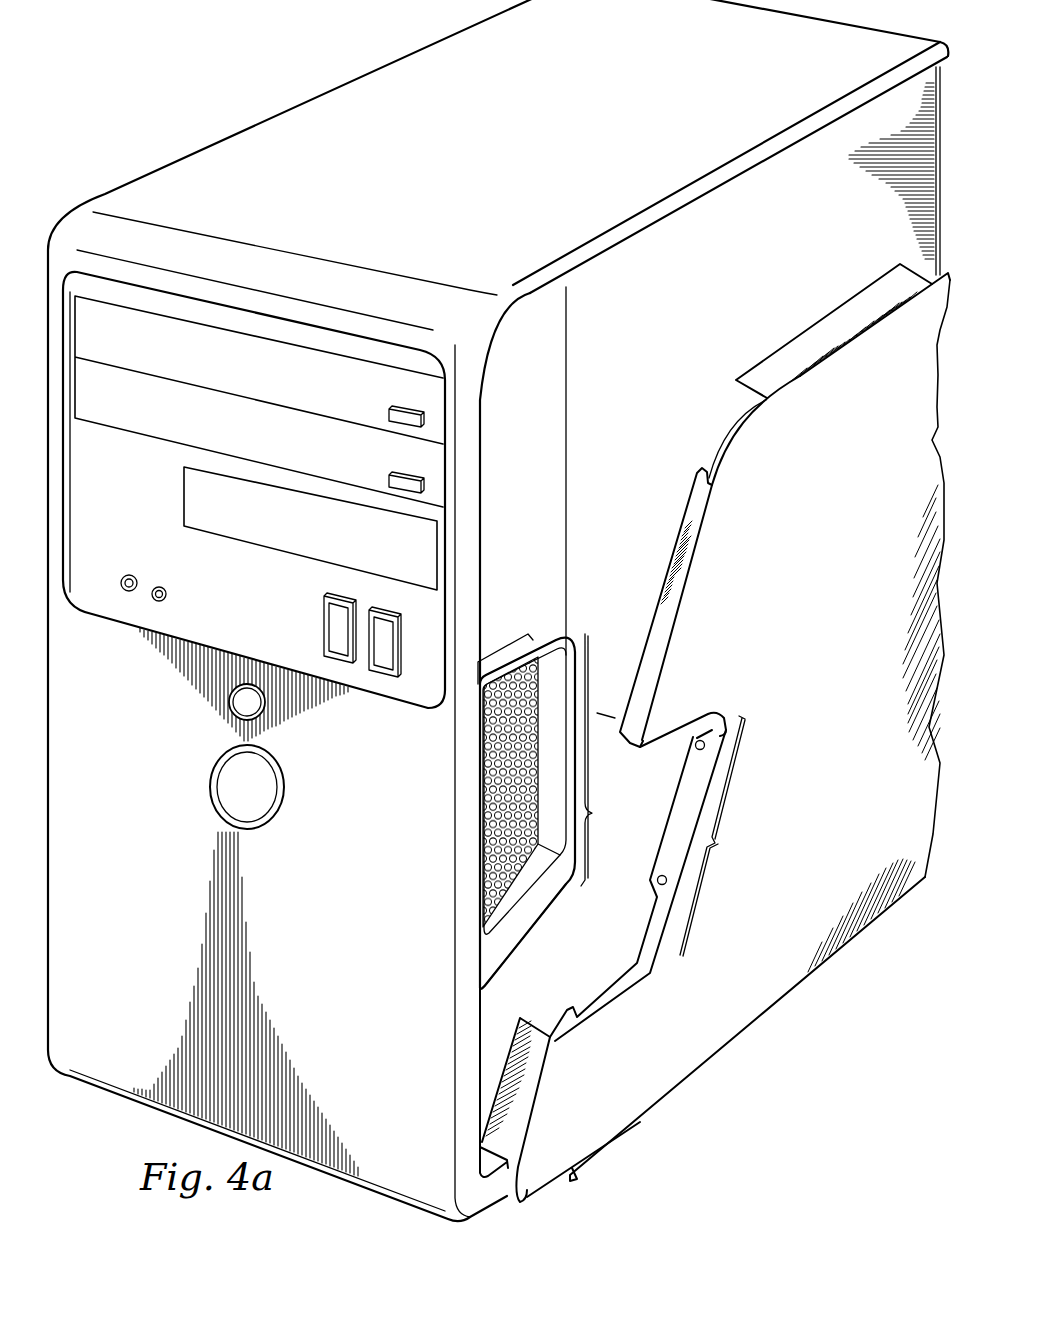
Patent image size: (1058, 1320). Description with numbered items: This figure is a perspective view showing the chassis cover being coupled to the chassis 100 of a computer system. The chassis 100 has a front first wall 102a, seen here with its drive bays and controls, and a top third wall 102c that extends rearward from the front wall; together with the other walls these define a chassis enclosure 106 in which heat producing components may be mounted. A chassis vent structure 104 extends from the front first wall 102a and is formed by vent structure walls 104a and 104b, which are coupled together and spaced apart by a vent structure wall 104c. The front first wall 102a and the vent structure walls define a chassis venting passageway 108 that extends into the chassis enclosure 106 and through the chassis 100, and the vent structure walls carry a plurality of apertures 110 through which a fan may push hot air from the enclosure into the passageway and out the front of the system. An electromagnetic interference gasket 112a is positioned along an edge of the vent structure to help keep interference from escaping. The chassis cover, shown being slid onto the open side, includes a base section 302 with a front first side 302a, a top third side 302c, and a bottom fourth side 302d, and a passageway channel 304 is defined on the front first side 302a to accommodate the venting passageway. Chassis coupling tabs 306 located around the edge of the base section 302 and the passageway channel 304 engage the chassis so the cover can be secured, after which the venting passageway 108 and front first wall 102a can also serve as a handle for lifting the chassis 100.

The chassis 100 is at (222, 62).
The front first wall 102a is at (158, 867).
The top third wall 102c is at (560, 130).
The chassis vent structure 104 is at (528, 770).
The vent structure wall 104a is at (550, 641).
The vent structure wall 104b is at (534, 937).
The vent structure wall 104c is at (551, 774).
The chassis enclosure 106 is at (604, 418).
The chassis venting passageway 108 is at (536, 881).
The apertures 110 is at (490, 778).
The electromagnetic interference gasket 112a is at (490, 633).
The base section 302 is at (848, 558).
The front first side 302a is at (698, 495).
The top third side 302c is at (737, 420).
The bottom fourth side 302d is at (753, 1027).
The passageway channel 304 is at (711, 798).
The chassis coupling tabs 306 is at (775, 362).